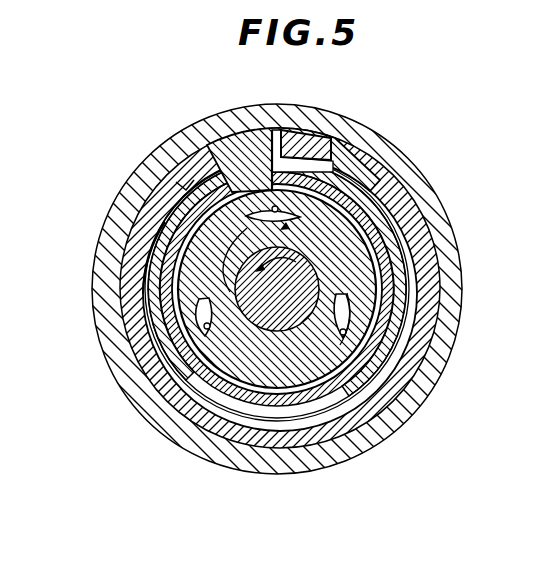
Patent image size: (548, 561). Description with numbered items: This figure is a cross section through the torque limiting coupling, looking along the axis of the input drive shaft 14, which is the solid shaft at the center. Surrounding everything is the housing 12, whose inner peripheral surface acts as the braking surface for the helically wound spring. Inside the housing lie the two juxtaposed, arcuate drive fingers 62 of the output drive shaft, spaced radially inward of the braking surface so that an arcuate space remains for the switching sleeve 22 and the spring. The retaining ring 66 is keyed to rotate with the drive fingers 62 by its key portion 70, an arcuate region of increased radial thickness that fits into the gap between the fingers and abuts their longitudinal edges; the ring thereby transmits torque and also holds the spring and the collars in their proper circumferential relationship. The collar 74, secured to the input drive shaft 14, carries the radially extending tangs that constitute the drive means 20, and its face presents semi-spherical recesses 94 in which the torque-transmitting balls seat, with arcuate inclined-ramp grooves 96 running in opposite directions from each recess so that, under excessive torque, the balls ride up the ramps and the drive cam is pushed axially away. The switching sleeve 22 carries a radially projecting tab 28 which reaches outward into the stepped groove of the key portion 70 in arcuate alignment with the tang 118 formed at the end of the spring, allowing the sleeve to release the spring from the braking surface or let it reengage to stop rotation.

The housing 12 is at (370, 114).
The input drive shaft 14 is at (329, 266).
The drive means 20 is at (242, 142).
The switching sleeve 22 is at (388, 320).
The tab 28 is at (362, 168).
The drive fingers 62 is at (396, 212).
The retaining ring 66 is at (420, 226).
The key portion 70 is at (193, 180).
The collar 74 is at (392, 277).
The semi-spherical recess 94 is at (252, 271).
The inclined-ramp groove 96 is at (282, 214).
The tang 118 is at (304, 134).